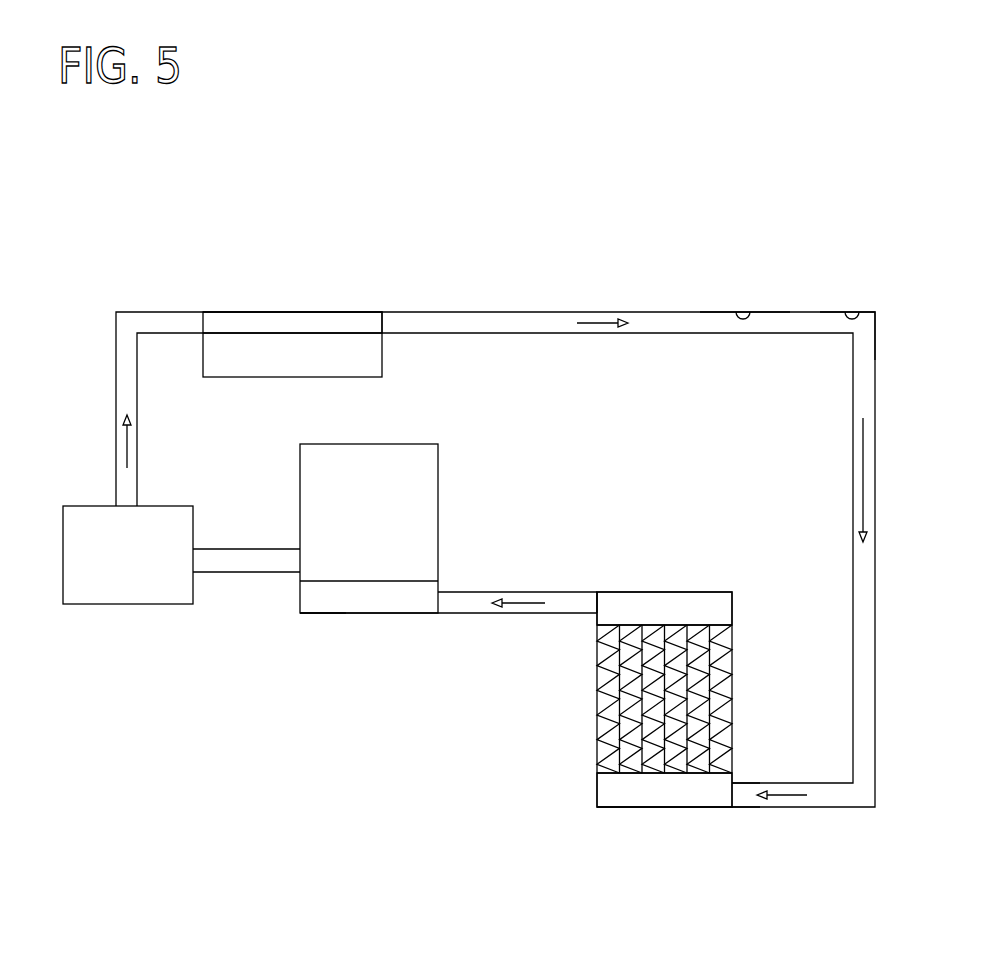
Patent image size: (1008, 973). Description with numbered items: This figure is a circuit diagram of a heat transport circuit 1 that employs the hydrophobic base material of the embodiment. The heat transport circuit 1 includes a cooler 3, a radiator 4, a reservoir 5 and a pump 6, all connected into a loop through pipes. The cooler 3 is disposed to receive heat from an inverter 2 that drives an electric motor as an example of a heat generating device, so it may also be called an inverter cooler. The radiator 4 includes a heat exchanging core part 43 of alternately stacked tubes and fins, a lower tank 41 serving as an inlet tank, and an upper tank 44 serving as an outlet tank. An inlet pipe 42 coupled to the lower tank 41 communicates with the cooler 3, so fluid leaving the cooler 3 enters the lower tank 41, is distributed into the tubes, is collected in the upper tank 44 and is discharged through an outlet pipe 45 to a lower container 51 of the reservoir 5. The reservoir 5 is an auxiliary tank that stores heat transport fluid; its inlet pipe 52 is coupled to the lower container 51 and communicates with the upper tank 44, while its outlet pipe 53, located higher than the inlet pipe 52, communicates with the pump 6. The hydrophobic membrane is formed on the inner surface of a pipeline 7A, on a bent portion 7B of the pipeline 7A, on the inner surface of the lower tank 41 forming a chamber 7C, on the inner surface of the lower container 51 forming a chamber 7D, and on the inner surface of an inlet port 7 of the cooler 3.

The heat transport circuit 1 is at (664, 281).
The inverter 2 is at (382, 355).
The cooler 3 is at (362, 322).
The radiator 4 is at (713, 580).
The lower tank 41 is at (597, 785).
The inlet pipe 42 is at (740, 807).
The heat exchanging core part 43 is at (732, 652).
The upper tank 44 is at (670, 590).
The outlet pipe 45 is at (587, 590).
The reservoir 5 is at (438, 460).
The lower container 51 is at (346, 613).
The inlet pipe 52 is at (448, 613).
The outlet pipe 53 is at (282, 549).
The pump 6 is at (90, 506).
The inlet port 7 is at (203, 322).
The pipeline 7A is at (743, 312).
The bent portion 7B is at (852, 312).
The chamber 7C is at (660, 793).
The chamber 7D is at (376, 605).